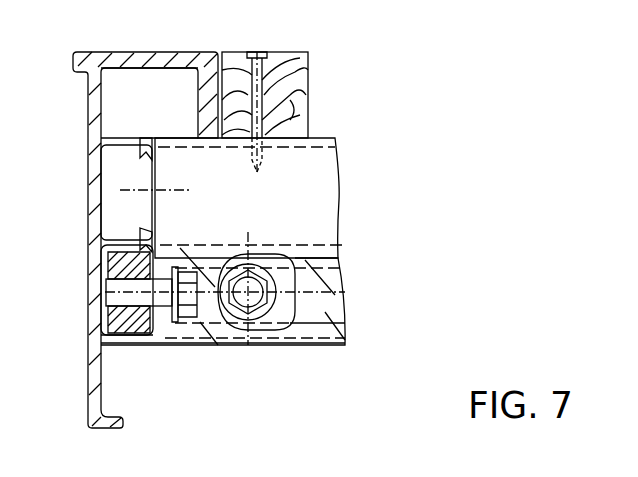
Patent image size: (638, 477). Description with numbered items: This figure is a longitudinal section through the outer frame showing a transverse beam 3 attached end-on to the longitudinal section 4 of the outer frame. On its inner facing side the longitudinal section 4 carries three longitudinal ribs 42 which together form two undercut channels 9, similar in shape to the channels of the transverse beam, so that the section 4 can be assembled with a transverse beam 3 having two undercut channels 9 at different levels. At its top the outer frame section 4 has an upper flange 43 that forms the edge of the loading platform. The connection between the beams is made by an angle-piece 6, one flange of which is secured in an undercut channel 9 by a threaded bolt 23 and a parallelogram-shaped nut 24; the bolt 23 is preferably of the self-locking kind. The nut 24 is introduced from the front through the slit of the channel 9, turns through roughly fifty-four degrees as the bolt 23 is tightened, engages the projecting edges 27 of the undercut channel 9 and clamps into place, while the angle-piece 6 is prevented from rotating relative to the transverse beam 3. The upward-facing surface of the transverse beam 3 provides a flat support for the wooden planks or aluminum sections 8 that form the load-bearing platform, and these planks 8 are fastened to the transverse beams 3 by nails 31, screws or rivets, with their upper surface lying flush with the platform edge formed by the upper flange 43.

The transverse beam 3 is at (320, 352).
The longitudinal section of the outer frame 4 is at (82, 200).
The angle-piece 6 is at (203, 345).
The planks or sections 8 is at (295, 70).
The undercut channel 9 is at (113, 170).
The threaded bolt 23 is at (125, 298).
The parallelogram-shaped nut 24 is at (297, 318).
The projecting edges 27 is at (146, 339).
The nail 31 is at (259, 62).
The longitudinal rib 42 is at (115, 146).
The upper flange 43 is at (147, 56).